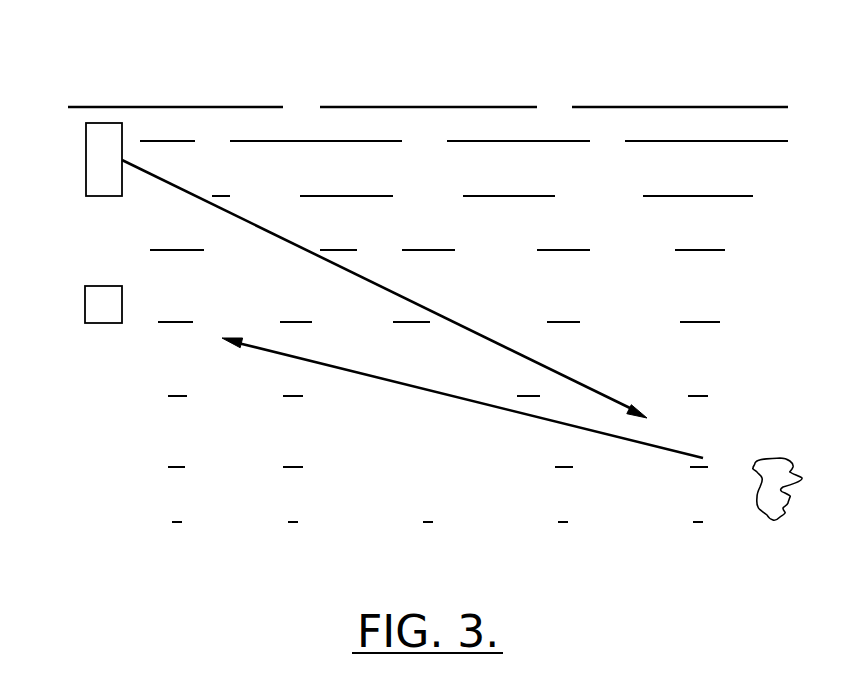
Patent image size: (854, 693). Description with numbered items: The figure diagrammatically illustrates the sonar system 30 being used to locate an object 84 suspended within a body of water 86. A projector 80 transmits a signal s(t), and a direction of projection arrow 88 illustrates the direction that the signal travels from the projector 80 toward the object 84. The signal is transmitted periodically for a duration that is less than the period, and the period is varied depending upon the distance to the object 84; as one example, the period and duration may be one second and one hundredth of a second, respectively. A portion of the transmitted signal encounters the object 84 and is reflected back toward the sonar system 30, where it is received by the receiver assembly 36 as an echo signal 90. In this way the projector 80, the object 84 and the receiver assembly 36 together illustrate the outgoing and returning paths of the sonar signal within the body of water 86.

The sonar system 30 is at (232, 88).
The body of water 86 is at (643, 106).
The projector 80 is at (86, 161).
The receiver assembly 36 is at (103, 286).
The direction of projection arrow 88 is at (434, 308).
The echo signal 90 is at (437, 394).
The object 84 is at (772, 522).